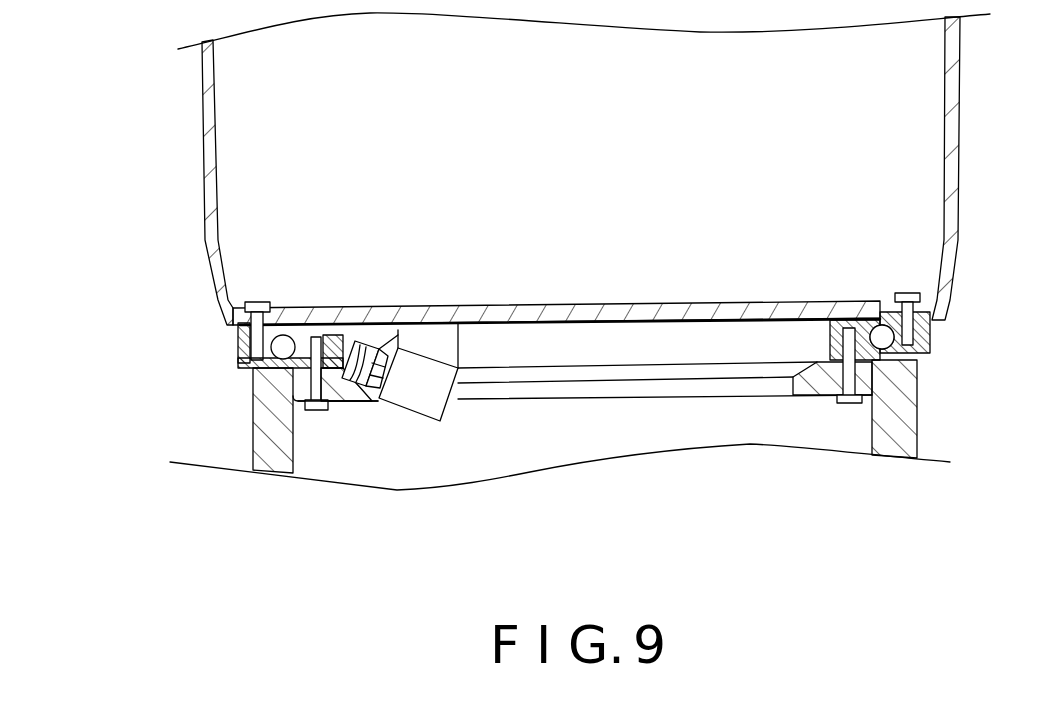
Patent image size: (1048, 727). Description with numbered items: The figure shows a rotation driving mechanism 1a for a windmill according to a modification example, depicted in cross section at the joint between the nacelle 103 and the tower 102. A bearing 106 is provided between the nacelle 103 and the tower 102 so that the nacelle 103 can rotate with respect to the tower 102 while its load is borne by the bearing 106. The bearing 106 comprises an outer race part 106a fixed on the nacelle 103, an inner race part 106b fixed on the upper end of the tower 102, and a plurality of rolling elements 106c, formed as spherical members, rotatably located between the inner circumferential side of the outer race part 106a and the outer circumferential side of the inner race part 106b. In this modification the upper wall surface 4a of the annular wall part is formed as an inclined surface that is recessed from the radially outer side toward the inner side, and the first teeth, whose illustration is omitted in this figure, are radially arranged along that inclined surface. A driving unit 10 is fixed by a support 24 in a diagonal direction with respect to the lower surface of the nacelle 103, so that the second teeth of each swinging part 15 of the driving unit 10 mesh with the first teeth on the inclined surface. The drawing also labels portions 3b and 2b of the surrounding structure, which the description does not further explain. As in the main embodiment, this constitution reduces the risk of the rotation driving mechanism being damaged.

The nacelle 103 is at (968, 132).
The support 24 is at (450, 347).
The bearing 106 is at (492, 355).
The outer race part 106a is at (238, 333).
The inner race part 106b is at (328, 335).
The rolling elements 106c is at (294, 330).
The tower 102 is at (928, 424).
The driving unit 10 is at (470, 393).
The upper wall surface 4a is at (400, 333).
The swinging part 15 is at (365, 333).
The hatched wedge 3b is at (378, 405).
The housing bottom surface 2b is at (358, 413).
The rotation driving mechanism 1a is at (437, 430).